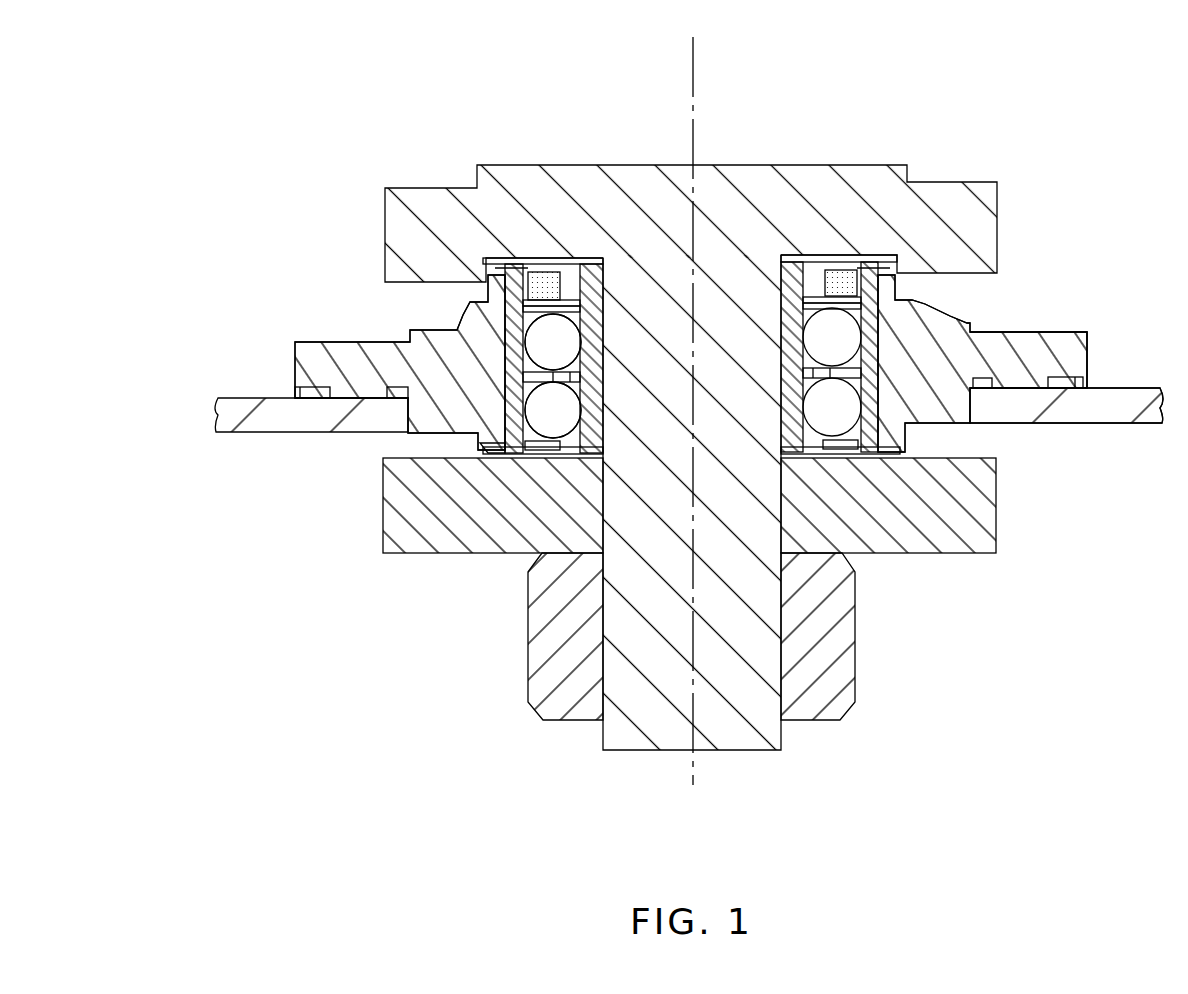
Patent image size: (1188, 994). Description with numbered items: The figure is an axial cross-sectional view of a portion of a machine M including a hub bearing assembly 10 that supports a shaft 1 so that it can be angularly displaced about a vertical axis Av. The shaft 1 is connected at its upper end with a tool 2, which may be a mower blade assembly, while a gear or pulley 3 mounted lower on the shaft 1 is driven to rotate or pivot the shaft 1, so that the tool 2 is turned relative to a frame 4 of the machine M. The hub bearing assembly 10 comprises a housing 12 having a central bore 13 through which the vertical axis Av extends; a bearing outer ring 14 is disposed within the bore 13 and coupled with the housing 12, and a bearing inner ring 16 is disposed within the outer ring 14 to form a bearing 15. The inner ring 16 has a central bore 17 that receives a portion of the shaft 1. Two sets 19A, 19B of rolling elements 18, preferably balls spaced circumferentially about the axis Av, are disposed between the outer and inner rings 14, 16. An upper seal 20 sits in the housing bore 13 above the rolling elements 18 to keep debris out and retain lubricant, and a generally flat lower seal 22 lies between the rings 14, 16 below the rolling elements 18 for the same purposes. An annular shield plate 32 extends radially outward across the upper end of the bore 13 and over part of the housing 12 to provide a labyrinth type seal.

The shaft 1 is at (630, 754).
The tool 2 is at (982, 176).
The gear or pulley 3 is at (380, 516).
The frame 4 is at (230, 393).
The hub bearing assembly 10 is at (298, 285).
The housing 12 is at (1086, 329).
The central bore 13 is at (876, 438).
The bearing outer ring 14 is at (884, 352).
The bearing 15 is at (617, 337).
The bearing inner ring 16 is at (778, 403).
The central bore 17 is at (604, 391).
The rolling elements 18 is at (812, 326).
The set of rolling elements 19A is at (581, 330).
The set of rolling elements 19B is at (580, 409).
The upper seal 20 is at (529, 290).
The lower seal 22 is at (521, 447).
The shield plate 32 is at (528, 256).
The vertical axis Av is at (693, 57).
The machine M is at (1107, 177).